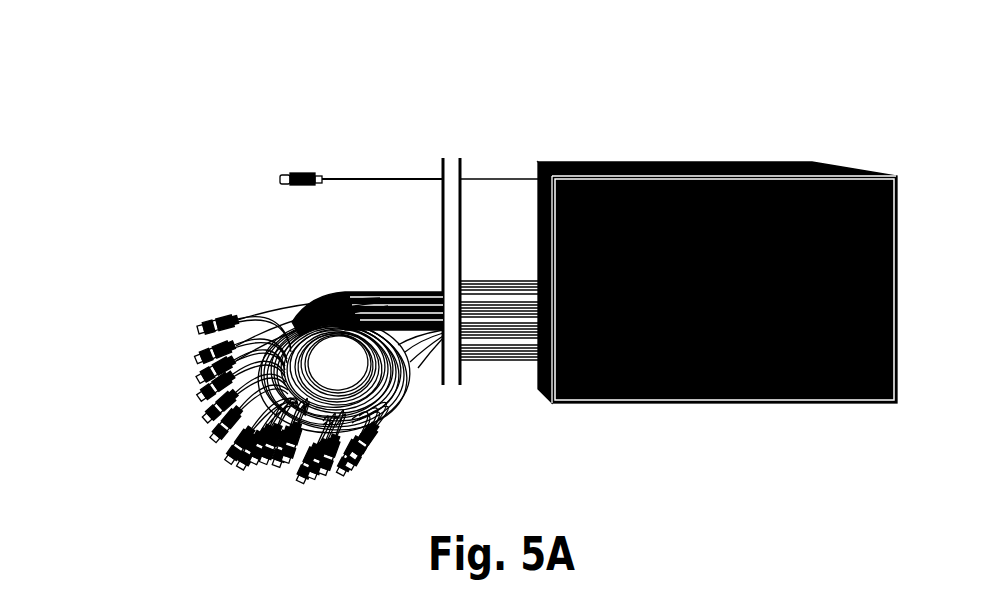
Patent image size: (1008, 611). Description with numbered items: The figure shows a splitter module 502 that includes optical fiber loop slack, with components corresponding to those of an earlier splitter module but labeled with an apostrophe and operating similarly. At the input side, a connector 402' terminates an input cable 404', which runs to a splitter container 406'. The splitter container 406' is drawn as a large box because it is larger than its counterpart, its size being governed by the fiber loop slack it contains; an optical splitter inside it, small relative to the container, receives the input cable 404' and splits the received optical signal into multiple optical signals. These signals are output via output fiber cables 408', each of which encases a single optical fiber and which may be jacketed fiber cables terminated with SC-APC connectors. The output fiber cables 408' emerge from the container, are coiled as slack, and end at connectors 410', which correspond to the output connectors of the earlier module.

The splitter module 502 is at (126, 68).
The connector 402' is at (361, 141).
The input cable 404' is at (490, 241).
The splitter container 406' is at (717, 249).
The output fiber cables 408' is at (511, 371).
The connectors 410' is at (272, 388).